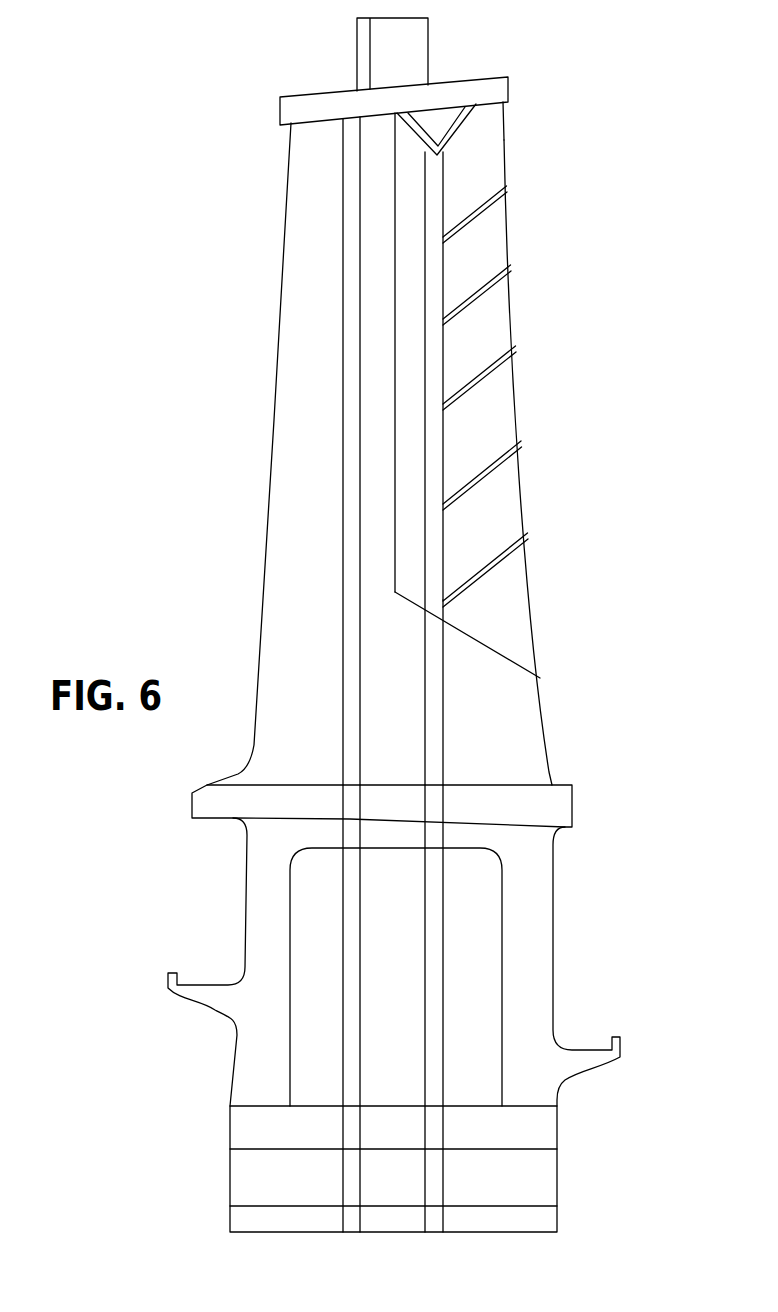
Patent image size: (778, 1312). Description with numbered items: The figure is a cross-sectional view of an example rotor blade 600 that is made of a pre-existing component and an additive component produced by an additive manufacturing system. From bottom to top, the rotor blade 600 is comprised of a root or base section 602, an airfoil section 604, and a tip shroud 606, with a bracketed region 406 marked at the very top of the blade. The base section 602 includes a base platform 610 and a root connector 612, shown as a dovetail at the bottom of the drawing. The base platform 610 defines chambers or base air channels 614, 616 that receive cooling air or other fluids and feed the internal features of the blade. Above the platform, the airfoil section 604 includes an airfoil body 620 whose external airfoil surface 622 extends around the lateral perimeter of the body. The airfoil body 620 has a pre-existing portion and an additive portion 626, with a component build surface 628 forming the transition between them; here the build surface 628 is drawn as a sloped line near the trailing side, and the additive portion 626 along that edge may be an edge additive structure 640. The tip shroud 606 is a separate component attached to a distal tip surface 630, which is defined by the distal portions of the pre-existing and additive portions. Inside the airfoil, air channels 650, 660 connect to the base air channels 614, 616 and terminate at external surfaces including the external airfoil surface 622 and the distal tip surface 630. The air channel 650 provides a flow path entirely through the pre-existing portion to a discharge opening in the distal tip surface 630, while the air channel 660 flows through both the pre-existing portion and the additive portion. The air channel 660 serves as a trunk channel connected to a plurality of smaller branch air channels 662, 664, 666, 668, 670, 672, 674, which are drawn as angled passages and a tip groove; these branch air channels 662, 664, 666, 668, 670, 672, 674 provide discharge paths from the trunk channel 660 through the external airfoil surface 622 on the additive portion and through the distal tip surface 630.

The rotor blade 600 is at (166, 99).
The airfoil body 620 is at (100, 402).
The tip portion 406 is at (622, 15).
The airfoil section 604 is at (622, 781).
The base section 602 is at (622, 1246).
The tip shroud 606 is at (495, 100).
The distal tip surface 630 is at (502, 102).
The branch air channel 672 is at (458, 110).
The branch air channel 674 is at (423, 130).
The branch air channel 670 is at (472, 212).
The branch air channel 668 is at (472, 297).
The branch air channel 666 is at (472, 388).
The branch air channel 664 is at (497, 468).
The branch air channel 662 is at (513, 552).
The edge additive structure 640 is at (487, 225).
The external airfoil surface 622 is at (263, 553).
The additive portion 626 is at (498, 403).
The component build surface 628 is at (490, 647).
The air channel 660 is at (443, 697).
The air channel 650 is at (343, 685).
The base platform 610 is at (207, 802).
The base air channel 616 is at (438, 1007).
The base air channel 614 is at (347, 1042).
The root connector 612 is at (228, 1172).